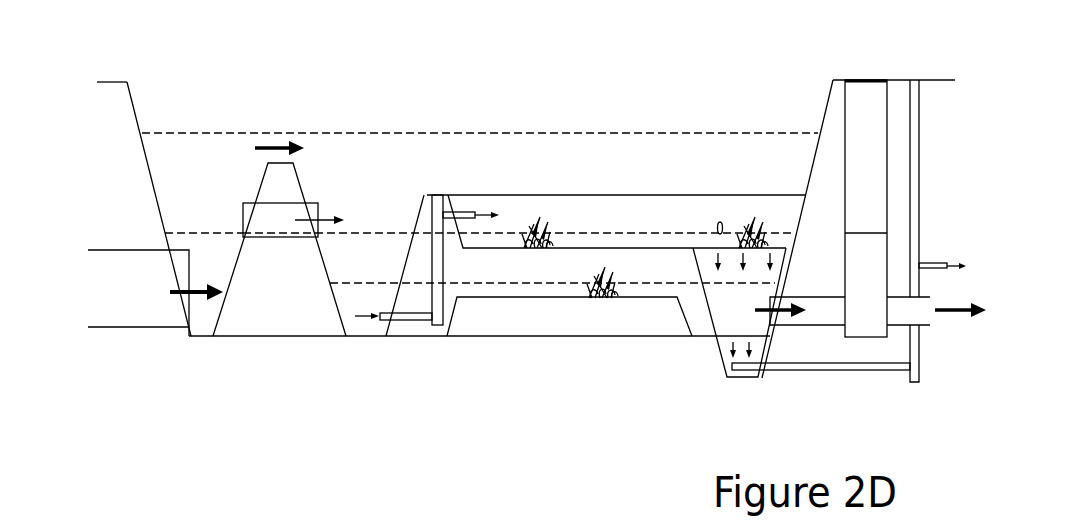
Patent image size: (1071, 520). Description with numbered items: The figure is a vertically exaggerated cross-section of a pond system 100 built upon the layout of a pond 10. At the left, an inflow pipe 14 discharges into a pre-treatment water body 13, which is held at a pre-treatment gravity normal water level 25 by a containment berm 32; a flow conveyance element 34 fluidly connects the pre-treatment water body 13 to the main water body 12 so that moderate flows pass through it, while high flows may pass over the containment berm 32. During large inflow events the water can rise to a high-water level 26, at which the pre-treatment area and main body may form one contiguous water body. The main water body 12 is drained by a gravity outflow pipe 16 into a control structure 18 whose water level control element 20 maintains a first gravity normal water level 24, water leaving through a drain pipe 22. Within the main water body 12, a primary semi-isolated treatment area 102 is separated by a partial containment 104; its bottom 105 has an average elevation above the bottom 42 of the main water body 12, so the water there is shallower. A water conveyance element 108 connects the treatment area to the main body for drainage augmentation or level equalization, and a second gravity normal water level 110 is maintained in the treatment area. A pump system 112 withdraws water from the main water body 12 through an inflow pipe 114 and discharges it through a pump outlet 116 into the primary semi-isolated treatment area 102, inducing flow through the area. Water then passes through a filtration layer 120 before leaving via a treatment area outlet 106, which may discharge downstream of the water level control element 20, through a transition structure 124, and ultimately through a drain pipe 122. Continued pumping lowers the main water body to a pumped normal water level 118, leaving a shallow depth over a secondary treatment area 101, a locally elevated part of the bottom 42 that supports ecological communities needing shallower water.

The pond 10 is at (133, 107).
The main water body 12 is at (360, 207).
The pre-treatment water body 13 is at (190, 207).
The inflow pipe 14 is at (120, 250).
The outflow pipe 16 is at (800, 311).
The control structure 18 is at (869, 80).
The water level control element 20 is at (868, 233).
The drain pipe 22 is at (936, 311).
The first gravity normal water level 24 is at (390, 233).
The pre-treatment gravity normal water level 25 is at (225, 233).
The high-water level 26 is at (385, 133).
The containment berm 32 is at (279, 249).
The flow conveyance element 34 is at (250, 205).
The bottom 42 is at (360, 327).
The pond system 100 is at (499, 52).
The secondary treatment area 101 is at (527, 297).
The primary semi-isolated treatment area 102 is at (659, 146).
The partial containment 104 is at (413, 207).
The bottom 105 is at (580, 248).
The treatment area outlet 106 is at (863, 370).
The water conveyance element 108 is at (717, 226).
The second gravity normal water level 110 is at (623, 233).
The pump system 112 is at (440, 195).
The inflow pipe 114 is at (432, 330).
The pump outlet 116 is at (460, 212).
The pumped normal water level 118 is at (392, 283).
The filtration layer 120 is at (717, 357).
The drain pipe 122 is at (935, 263).
The transition structure 124 is at (915, 382).